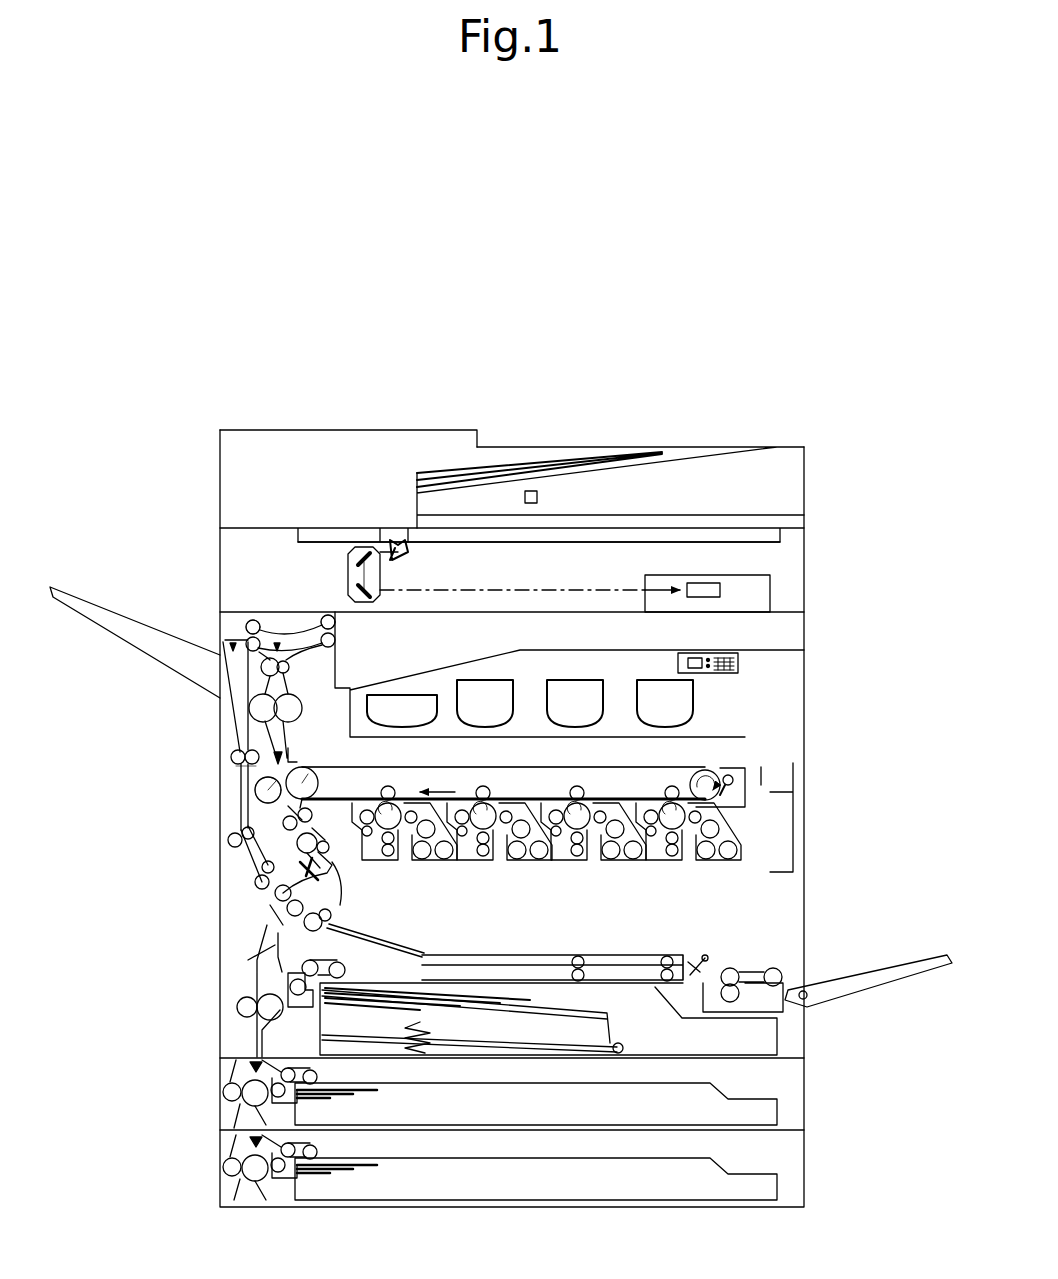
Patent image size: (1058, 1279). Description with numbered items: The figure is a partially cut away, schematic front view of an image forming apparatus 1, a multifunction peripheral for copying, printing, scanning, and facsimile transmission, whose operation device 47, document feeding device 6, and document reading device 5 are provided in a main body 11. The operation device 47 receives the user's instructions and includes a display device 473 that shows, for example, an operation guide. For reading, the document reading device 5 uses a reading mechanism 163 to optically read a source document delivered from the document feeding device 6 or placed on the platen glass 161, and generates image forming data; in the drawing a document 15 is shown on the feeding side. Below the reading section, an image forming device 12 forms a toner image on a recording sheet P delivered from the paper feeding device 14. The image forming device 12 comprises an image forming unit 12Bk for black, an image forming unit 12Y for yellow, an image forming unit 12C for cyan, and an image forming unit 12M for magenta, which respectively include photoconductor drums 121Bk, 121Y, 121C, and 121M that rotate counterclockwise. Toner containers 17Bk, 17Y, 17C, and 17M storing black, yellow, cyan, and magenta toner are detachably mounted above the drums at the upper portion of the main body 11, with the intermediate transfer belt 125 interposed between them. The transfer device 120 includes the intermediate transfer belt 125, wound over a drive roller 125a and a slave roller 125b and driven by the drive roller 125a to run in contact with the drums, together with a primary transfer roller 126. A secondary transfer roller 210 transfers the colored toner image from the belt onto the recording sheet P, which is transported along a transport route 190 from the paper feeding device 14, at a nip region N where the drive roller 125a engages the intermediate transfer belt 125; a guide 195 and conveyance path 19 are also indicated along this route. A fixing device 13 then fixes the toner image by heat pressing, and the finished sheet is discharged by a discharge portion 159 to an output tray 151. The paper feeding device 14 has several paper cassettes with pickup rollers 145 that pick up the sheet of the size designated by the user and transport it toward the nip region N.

The image forming apparatus 1 is at (887, 506).
The document reading device 5 is at (193, 563).
The document feeding device 6 is at (641, 432).
The main body 11 is at (812, 870).
The image forming device 12 is at (760, 805).
The fixing device 13 is at (238, 712).
The paper feeding device 14 is at (780, 1087).
The document 15 is at (525, 497).
The sheet conveyance path 19 is at (333, 862).
The operation device 47 is at (745, 668).
The transfer device 120 is at (523, 790).
The photoconductor drum for black 121Bk is at (390, 802).
The photoconductor drum for yellow 121Y is at (483, 784).
The photoconductor drum for cyan 121C is at (575, 784).
The photoconductor drum for magenta 121M is at (660, 784).
The intermediate transfer belt 125 is at (700, 778).
The drive roller 125a is at (305, 778).
The slave roller 125b is at (735, 778).
The primary transfer roller 126 is at (690, 793).
The image forming unit for black 12Bk is at (407, 877).
The image forming unit for yellow 12Y is at (499, 875).
The image forming unit for cyan 12C is at (593, 875).
The image forming unit for magenta 12M is at (688, 875).
The pickup roller 145 is at (300, 1160).
The output tray 151 is at (347, 688).
The discharge roller 159 is at (335, 624).
The platen glass 161 is at (663, 540).
The reading mechanism 163 is at (345, 578).
The toner container for black 17Bk is at (400, 695).
The toner container for yellow 17Y is at (485, 680).
The toner container for cyan 17C is at (575, 680).
The toner container for magenta 17M is at (660, 680).
The transport route 190 is at (258, 790).
The conveyance guide 195 is at (280, 768).
The secondary transfer roller 210 is at (300, 790).
The display device 473 is at (707, 644).
The nip region N is at (258, 753).
The recording sheet P is at (600, 1007).